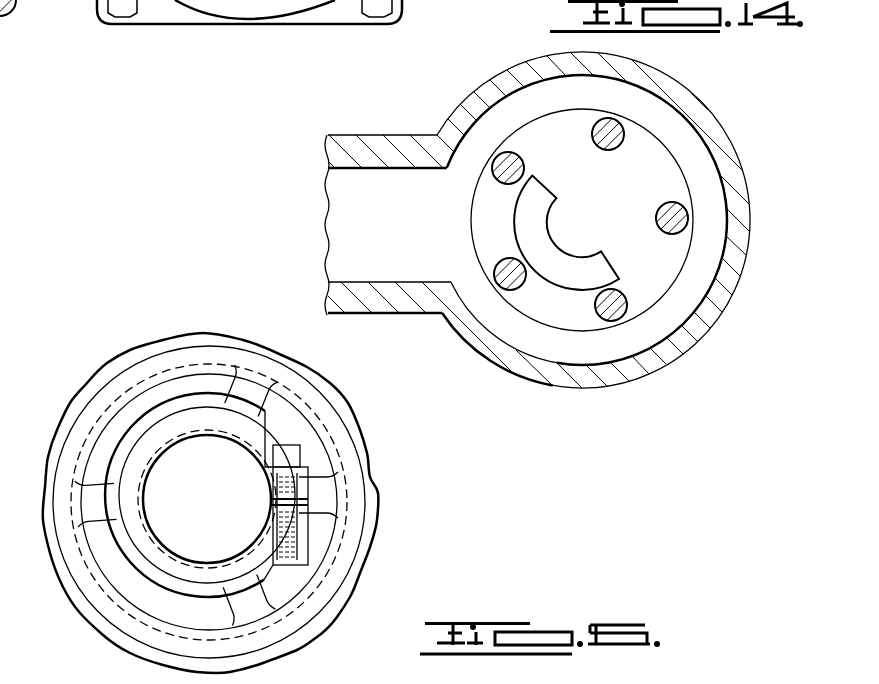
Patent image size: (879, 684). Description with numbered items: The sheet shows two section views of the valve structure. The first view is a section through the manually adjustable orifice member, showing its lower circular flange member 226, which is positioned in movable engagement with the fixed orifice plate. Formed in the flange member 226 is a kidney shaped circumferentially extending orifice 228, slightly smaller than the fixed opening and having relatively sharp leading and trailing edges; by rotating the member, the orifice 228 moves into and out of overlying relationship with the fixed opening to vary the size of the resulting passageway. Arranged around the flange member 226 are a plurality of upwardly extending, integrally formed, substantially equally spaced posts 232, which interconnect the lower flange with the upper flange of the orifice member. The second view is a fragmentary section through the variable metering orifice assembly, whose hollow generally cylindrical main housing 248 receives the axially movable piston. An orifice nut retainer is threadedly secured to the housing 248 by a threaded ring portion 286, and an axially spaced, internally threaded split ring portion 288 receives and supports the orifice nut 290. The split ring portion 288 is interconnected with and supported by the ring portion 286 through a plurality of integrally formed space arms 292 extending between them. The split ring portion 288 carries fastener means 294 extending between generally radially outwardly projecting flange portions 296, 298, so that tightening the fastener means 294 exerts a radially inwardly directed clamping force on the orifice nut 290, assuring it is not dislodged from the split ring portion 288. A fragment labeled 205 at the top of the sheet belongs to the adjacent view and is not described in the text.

In FIG. 14, the bar 205 is at (96, 3).
In FIG. 14, the lower circular flange member 226 is at (662, 277).
In FIG. 14, the kidney shaped circumferentially extending orifice 228 is at (516, 214).
In FIG. 14, the posts 232 is at (660, 210).
In FIG. 15, the main housing 248 is at (318, 627).
In FIG. 15, the threaded ring portion 286 is at (133, 366).
In FIG. 15, the split ring portion 288 is at (142, 441).
In FIG. 15, the orifice nut 290 is at (199, 448).
In FIG. 15, the space arms 292 is at (245, 407).
In FIG. 15, the fastener means 294 is at (292, 455).
In FIG. 15, the flange portion 296 is at (307, 480).
In FIG. 15, the flange portion 298 is at (303, 525).